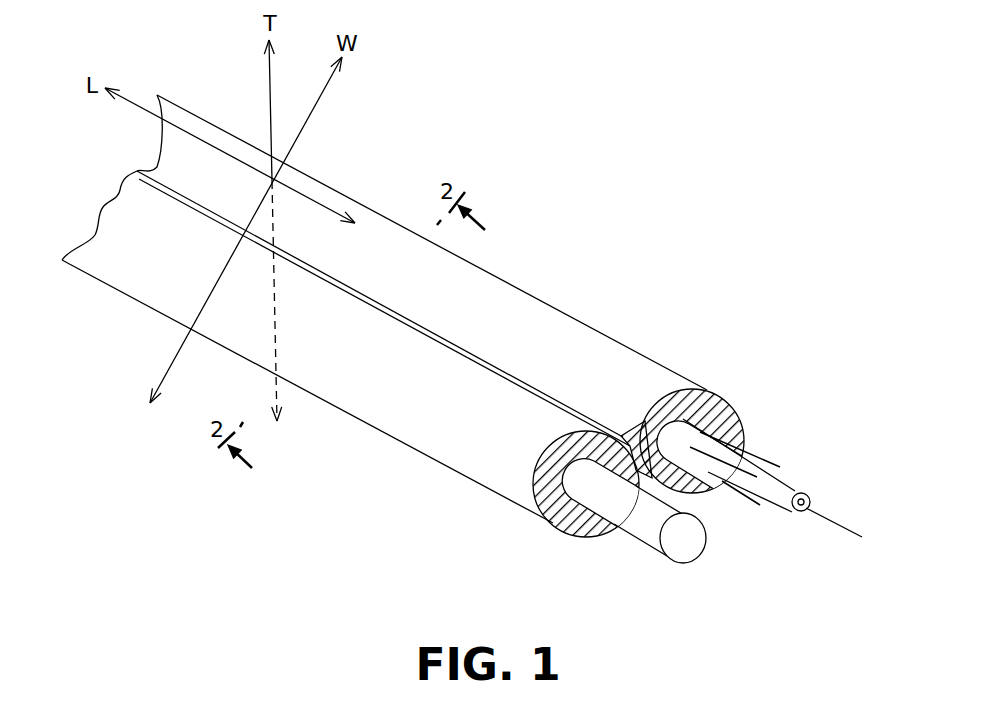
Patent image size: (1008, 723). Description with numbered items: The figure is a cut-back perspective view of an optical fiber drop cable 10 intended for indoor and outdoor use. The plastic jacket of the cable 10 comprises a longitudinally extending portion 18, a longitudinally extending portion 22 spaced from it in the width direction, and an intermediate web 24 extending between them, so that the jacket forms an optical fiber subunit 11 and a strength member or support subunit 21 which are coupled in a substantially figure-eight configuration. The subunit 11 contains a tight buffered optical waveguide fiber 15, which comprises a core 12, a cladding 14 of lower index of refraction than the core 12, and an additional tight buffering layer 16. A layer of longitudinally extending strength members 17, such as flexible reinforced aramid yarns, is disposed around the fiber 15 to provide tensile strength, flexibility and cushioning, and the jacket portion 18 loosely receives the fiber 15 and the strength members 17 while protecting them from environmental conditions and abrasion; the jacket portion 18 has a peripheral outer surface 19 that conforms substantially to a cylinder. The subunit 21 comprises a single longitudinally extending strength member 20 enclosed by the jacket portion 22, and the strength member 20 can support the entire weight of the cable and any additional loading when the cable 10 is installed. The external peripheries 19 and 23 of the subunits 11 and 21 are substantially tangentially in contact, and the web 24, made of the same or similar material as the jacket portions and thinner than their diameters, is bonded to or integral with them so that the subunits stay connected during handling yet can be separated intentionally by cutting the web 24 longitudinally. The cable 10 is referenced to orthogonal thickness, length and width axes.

The optical fiber drop cable 10 is at (561, 276).
The optical fiber subunit 11 is at (660, 368).
The core 12 is at (827, 520).
The cladding 14 is at (798, 512).
The tight buffered optical fiber 15 is at (757, 534).
The tight buffering layer 16 is at (806, 492).
The strength members 17 is at (758, 446).
The longitudinally extending jacket portion 18 is at (710, 393).
The peripheral outer surface 19 is at (722, 417).
The strength member 20 is at (648, 535).
The strength member subunit 21 is at (470, 462).
The longitudinally extending jacket portion 22 is at (548, 533).
The external periphery 23 is at (595, 538).
The web 24 is at (578, 397).